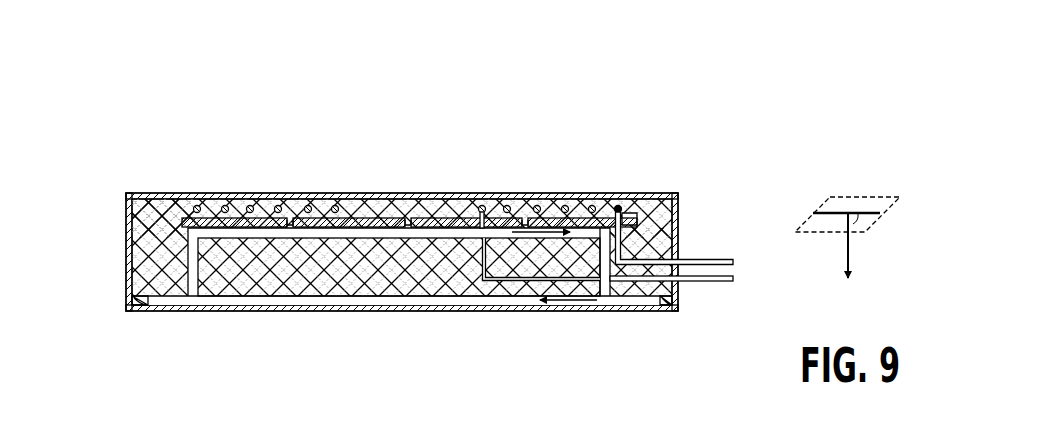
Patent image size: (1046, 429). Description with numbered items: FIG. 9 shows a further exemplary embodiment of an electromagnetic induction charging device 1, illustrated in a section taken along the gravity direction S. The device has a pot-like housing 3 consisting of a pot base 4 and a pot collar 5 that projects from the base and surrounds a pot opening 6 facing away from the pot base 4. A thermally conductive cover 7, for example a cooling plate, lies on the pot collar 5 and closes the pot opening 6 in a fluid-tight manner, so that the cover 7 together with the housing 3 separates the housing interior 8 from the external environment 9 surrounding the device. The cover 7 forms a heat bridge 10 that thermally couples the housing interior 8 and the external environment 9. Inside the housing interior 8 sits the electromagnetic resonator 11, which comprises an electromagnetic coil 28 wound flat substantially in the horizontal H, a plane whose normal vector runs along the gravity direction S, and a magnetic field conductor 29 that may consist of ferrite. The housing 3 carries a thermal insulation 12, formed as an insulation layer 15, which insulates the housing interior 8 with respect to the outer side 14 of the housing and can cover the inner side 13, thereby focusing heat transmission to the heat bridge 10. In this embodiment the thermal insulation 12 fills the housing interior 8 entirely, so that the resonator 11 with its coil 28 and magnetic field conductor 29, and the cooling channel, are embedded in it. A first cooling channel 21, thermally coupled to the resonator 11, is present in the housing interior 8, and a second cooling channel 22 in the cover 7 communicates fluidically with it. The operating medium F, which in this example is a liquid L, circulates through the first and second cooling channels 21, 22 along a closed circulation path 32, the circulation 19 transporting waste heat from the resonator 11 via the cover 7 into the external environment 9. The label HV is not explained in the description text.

The electromagnetic induction charging device 1 is at (746, 175).
The housing 3 is at (401, 191).
The pot base 4 is at (215, 194).
The pot collar 5 is at (126, 244).
The pot opening 6 is at (138, 311).
The thermally conductive cover 7 is at (402, 344).
The housing interior 8 is at (388, 296).
The external environment 9 is at (80, 144).
The heat bridge 10 is at (432, 311).
The electromagnetic resonator 11 is at (447, 207).
The thermal insulation 12 is at (649, 224).
The inner side of the housing 13 is at (127, 225).
The outer side of the housing 14 is at (160, 194).
The insulation layer 15 is at (650, 199).
The circulation 19 is at (550, 229).
The first cooling channel 21 is at (492, 228).
The second cooling channel 22 is at (512, 305).
The electromagnetic coil 28 is at (280, 207).
The magnetic field conductor 29 is at (350, 218).
The circulation path 32 is at (326, 308).
The operating medium F is at (407, 186).
The liquid L is at (318, 218).
The horizontal H is at (870, 210).
The gravity direction S is at (850, 250).
The high voltage supply HV is at (688, 254).